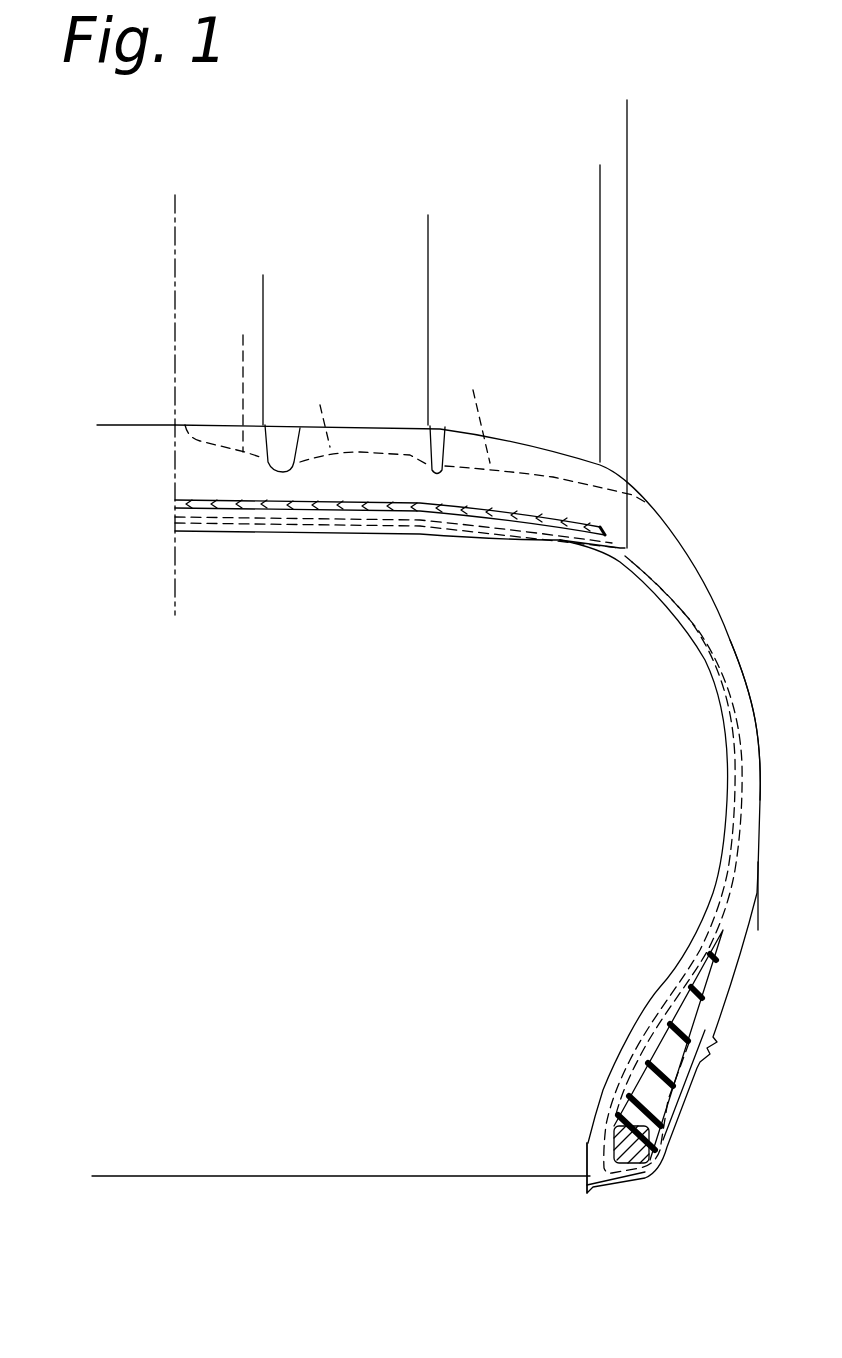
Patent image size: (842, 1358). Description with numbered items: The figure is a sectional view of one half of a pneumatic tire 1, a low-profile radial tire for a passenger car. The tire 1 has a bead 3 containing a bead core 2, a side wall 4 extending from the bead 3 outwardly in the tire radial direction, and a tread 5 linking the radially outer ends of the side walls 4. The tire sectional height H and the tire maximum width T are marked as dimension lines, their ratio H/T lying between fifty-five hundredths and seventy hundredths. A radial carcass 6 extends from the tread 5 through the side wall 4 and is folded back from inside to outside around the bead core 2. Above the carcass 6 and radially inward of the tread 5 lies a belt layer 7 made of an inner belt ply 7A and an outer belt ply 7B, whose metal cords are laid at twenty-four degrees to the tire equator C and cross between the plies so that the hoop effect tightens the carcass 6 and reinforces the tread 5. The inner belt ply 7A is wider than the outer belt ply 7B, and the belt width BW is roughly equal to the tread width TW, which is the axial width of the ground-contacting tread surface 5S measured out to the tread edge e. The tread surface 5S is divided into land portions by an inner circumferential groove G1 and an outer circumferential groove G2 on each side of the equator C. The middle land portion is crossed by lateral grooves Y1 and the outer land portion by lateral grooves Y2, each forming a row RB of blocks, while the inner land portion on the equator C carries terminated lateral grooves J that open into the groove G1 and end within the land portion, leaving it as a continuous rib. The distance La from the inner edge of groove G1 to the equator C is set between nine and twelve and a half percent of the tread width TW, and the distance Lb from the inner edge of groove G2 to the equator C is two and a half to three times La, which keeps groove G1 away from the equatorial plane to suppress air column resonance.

The pneumatic tire 1 is at (640, 470).
The bead core 2 is at (615, 1110).
The bead 3 is at (580, 1120).
The side wall 4 is at (733, 640).
The tread 5 is at (187, 408).
The tread surface 5S is at (213, 423).
The radial carcass 6 is at (660, 597).
The belt layer 7 is at (400, 602).
The inner belt ply 7A is at (470, 527).
The outer belt ply 7B is at (395, 512).
The tire equator C is at (177, 583).
The terminated lateral groove J is at (241, 383).
The tread edge e is at (602, 463).
The inner circumferential groove G1 is at (277, 410).
The outer circumferential groove G2 is at (440, 420).
The lateral groove Y1 is at (338, 409).
The lateral groove Y2 is at (488, 410).
The row of blocks RB is at (365, 425).
The tire sectional height H is at (107, 425).
The tire maximum width T is at (757, 894).
The tread width TW is at (600, 172).
The belt width BW is at (627, 122).
The distance La is at (263, 285).
The distance Lb is at (428, 225).